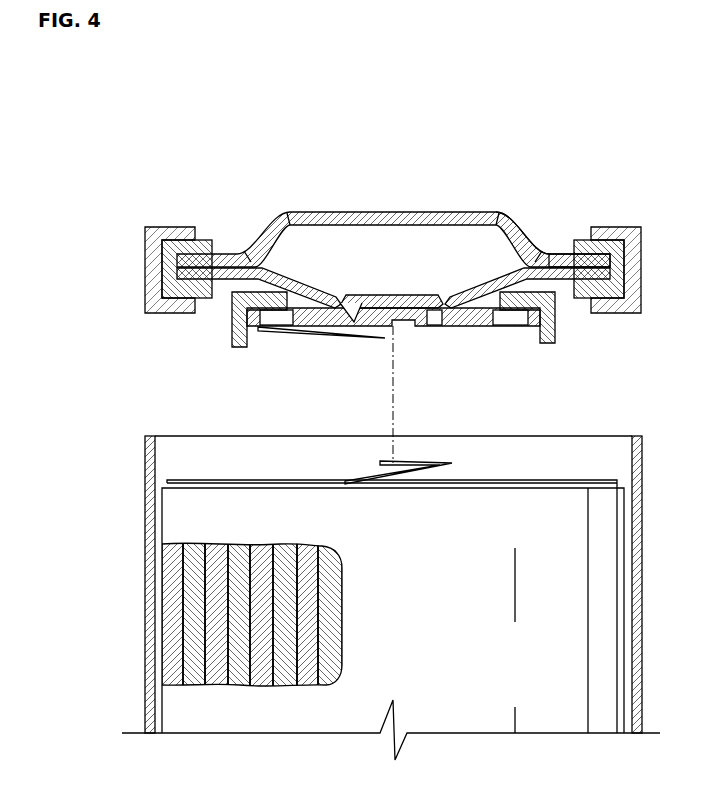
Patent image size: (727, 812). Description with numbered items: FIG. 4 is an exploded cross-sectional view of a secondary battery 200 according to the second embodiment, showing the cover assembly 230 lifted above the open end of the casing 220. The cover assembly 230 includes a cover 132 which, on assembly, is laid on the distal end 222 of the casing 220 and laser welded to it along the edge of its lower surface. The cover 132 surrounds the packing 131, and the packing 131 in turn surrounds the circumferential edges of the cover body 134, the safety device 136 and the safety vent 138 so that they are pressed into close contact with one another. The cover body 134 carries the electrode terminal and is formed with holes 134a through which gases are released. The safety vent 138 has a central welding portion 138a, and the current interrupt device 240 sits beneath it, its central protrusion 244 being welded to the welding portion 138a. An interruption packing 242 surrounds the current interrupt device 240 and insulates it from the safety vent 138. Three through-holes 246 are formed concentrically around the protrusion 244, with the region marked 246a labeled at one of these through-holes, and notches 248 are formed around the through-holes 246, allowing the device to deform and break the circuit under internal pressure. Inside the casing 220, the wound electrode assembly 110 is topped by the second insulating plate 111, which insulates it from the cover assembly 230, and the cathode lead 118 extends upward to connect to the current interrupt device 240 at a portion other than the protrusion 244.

The secondary battery 200 is at (364, 440).
The cover assembly 230 is at (406, 271).
The cover 132 is at (172, 228).
The packing 131 is at (600, 247).
The cover body 134 is at (355, 203).
The holes 134a is at (514, 226).
The safety device 136 is at (560, 258).
The safety vent 138 is at (429, 285).
The welding portion 138a is at (394, 296).
The current interrupt device 240 is at (419, 330).
The interruption packing 242 is at (555, 331).
The protrusion 244 is at (397, 314).
The through-holes 246 is at (512, 323).
The central opening 246a is at (432, 325).
The notches 248 is at (353, 318).
The casing 220 is at (368, 561).
The distal end 222 is at (636, 435).
The electrode assembly 110 is at (364, 610).
The second insulating plate 111 is at (571, 482).
The lead 118 is at (452, 464).